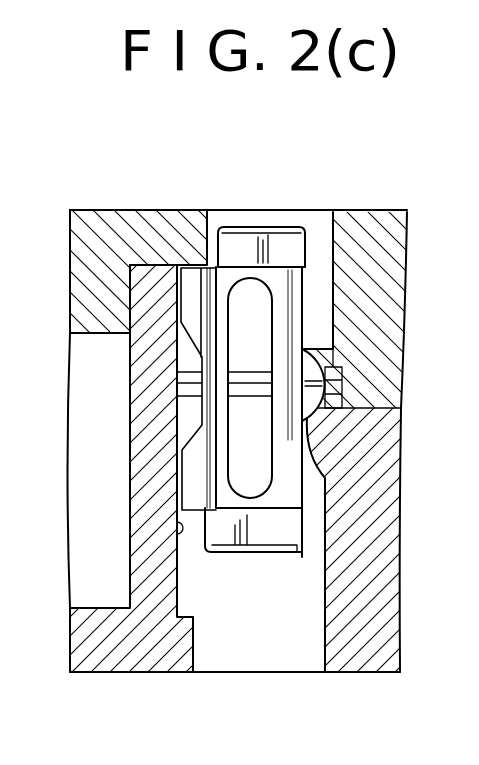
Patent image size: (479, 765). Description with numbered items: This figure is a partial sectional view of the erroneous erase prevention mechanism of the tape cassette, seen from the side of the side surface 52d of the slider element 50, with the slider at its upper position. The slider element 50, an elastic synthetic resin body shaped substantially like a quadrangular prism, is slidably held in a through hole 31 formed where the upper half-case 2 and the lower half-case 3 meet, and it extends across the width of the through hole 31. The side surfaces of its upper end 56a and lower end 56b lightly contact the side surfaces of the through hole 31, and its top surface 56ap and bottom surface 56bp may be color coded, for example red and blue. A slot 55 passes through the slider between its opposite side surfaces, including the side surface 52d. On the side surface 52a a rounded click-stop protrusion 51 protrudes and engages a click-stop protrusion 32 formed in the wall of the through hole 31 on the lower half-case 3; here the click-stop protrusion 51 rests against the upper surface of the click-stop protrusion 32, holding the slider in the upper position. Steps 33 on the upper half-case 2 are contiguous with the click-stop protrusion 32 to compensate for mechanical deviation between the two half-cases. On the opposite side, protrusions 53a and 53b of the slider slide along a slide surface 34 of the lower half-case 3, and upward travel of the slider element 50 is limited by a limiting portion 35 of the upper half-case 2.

The upper half-case 2 is at (239, 382).
The lower half-case 3 is at (239, 382).
The through hole 31 is at (255, 655).
The click-stop protrusion 32 is at (318, 430).
The steps 33 is at (344, 383).
The slide surface 34 is at (173, 542).
The limiting portion 35 is at (165, 252).
The slider element 50 is at (264, 375).
The click-stop protrusion 51 is at (305, 353).
The side surface 52a is at (239, 382).
The side surface 52d is at (283, 500).
The protrusion 53a is at (192, 272).
The protrusion 53b is at (193, 466).
The slot 55 is at (265, 300).
The upper end 56a is at (281, 214).
The top surface 56ap is at (287, 228).
The lower end 56b is at (250, 560).
The bottom surface 56bp is at (237, 553).